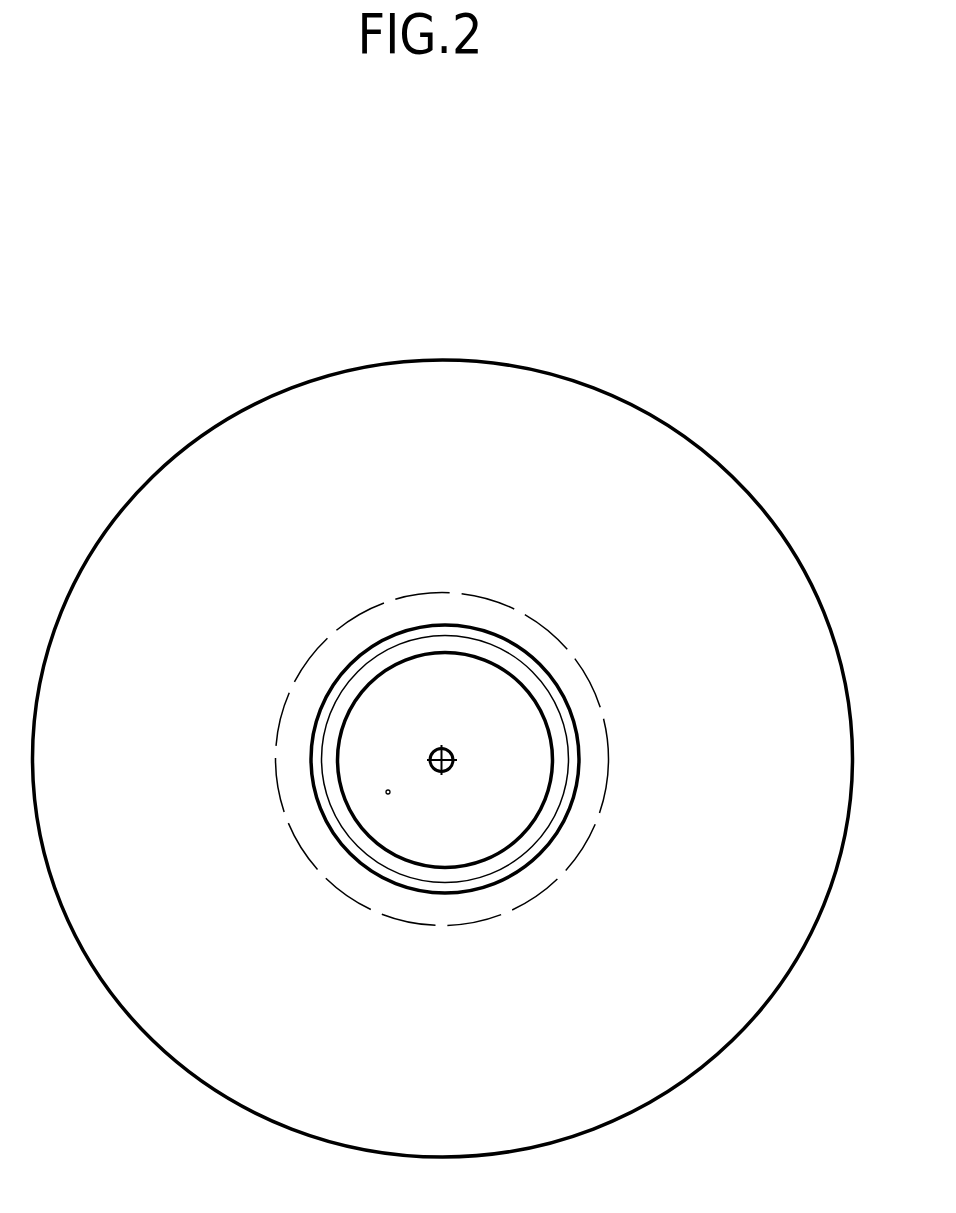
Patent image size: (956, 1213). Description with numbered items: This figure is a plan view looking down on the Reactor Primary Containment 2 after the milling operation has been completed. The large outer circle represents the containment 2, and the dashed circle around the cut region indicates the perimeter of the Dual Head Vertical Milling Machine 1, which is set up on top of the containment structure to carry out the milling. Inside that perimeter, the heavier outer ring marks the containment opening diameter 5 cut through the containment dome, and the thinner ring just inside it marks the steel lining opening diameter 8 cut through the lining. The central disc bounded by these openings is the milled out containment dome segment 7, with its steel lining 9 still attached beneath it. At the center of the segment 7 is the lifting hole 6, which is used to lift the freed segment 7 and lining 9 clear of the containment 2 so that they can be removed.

The Dual Head Vertical Milling Machine 1 is at (442, 695).
The Reactor Primary Containment 2 is at (443, 758).
The containment opening diameter 5 is at (445, 688).
The lifting hole 6 is at (453, 731).
The milled out containment dome segment 7 is at (391, 746).
The steel lining opening diameter 8 is at (477, 706).
The steel lining 9 is at (506, 721).